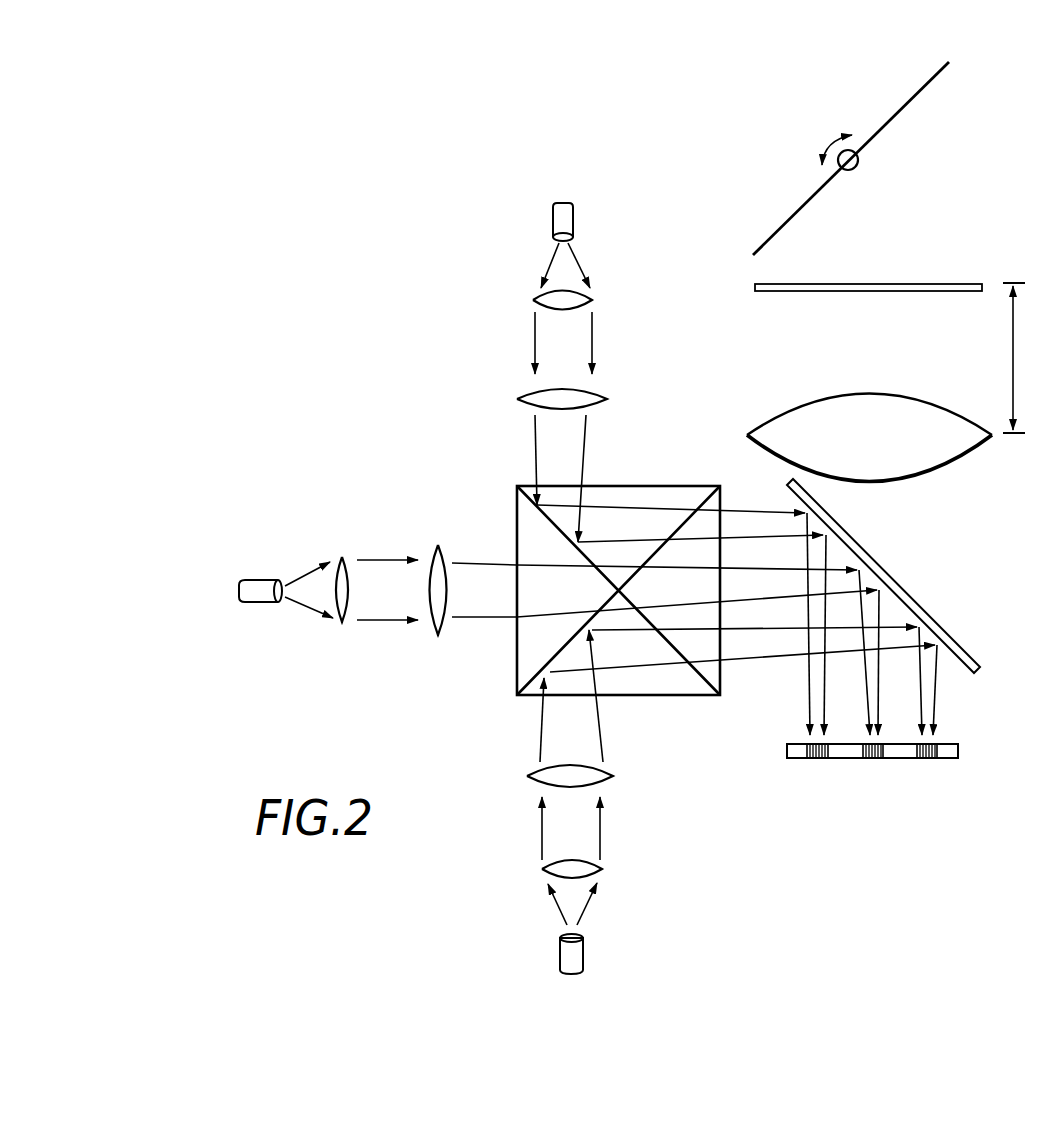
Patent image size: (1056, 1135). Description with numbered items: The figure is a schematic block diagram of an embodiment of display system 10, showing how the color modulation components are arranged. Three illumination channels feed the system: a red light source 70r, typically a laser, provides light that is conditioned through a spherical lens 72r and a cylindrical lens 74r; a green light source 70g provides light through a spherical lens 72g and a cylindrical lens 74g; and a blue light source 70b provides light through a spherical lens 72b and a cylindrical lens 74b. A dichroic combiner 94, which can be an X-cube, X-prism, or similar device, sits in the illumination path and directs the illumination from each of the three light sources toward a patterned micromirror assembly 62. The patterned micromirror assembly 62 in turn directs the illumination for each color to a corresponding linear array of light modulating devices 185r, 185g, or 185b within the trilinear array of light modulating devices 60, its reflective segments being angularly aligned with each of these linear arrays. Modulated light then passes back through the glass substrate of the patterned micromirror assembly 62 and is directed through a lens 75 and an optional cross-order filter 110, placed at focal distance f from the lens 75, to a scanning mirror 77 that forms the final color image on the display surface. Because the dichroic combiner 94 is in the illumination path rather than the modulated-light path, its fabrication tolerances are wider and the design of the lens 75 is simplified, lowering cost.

The display system 10 is at (298, 358).
The dichroic combiner 94 is at (650, 486).
The blue light source 70b is at (550, 213).
The spherical lens 72b is at (533, 300).
The cylindrical lens 74b is at (518, 403).
The green light source 70g is at (260, 580).
The spherical lens 72g is at (337, 558).
The cylindrical lens 74g is at (433, 551).
The red light source 70r is at (586, 947).
The spherical lens 72r is at (600, 866).
The cylindrical lens 74r is at (610, 772).
The patterned micromirror assembly 62 is at (870, 557).
The trilinear array of light modulating devices 60 is at (904, 751).
The linear array of light modulating devices 185r is at (812, 758).
The linear array of light modulating devices 185g is at (870, 758).
The linear array of light modulating devices 185b is at (933, 743).
The scanning mirror 77 is at (913, 93).
The cross-order filter 110 is at (953, 284).
The focal distance f is at (1019, 358).
The lens 75 is at (897, 400).